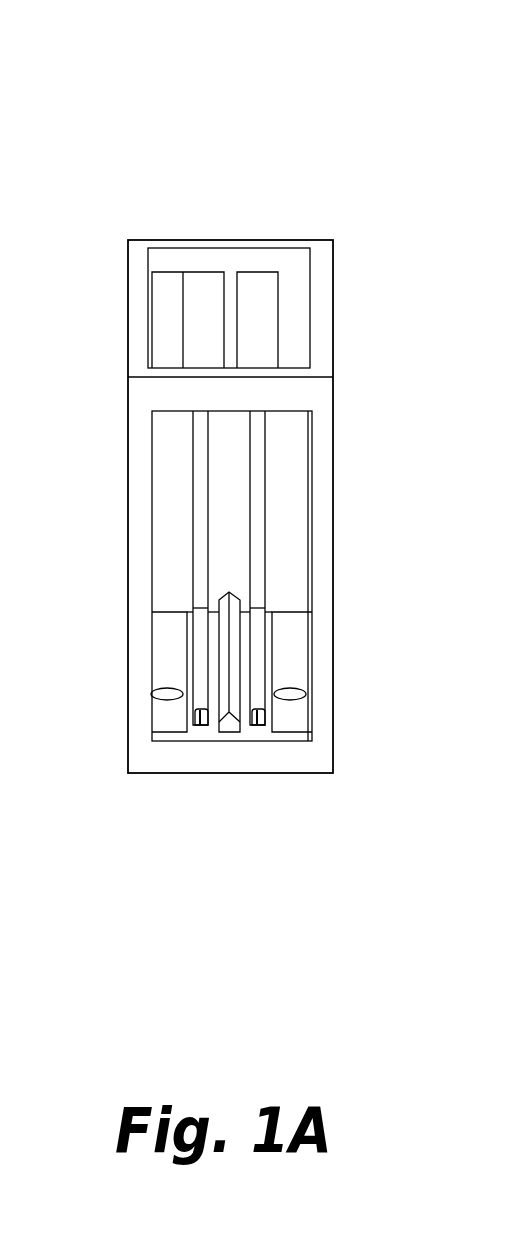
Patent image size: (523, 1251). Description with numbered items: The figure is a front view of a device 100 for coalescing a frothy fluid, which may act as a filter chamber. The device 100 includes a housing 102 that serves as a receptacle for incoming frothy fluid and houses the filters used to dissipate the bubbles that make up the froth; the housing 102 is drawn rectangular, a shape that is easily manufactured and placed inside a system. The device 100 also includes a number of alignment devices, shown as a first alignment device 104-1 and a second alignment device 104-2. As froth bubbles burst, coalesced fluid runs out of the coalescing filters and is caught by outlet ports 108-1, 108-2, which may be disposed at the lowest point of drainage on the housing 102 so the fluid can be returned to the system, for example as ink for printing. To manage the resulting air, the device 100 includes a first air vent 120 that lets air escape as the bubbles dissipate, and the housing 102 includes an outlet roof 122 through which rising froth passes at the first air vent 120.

The device 100 is at (200, 95).
The housing 102 is at (127, 320).
The first air vent 120 is at (226, 282).
The outlet roof 122 is at (263, 318).
The first alignment device 104-1 is at (201, 725).
The second alignment device 104-2 is at (257, 725).
The first outlet port 108-1 is at (152, 694).
The second outlet port 108-2 is at (305, 695).